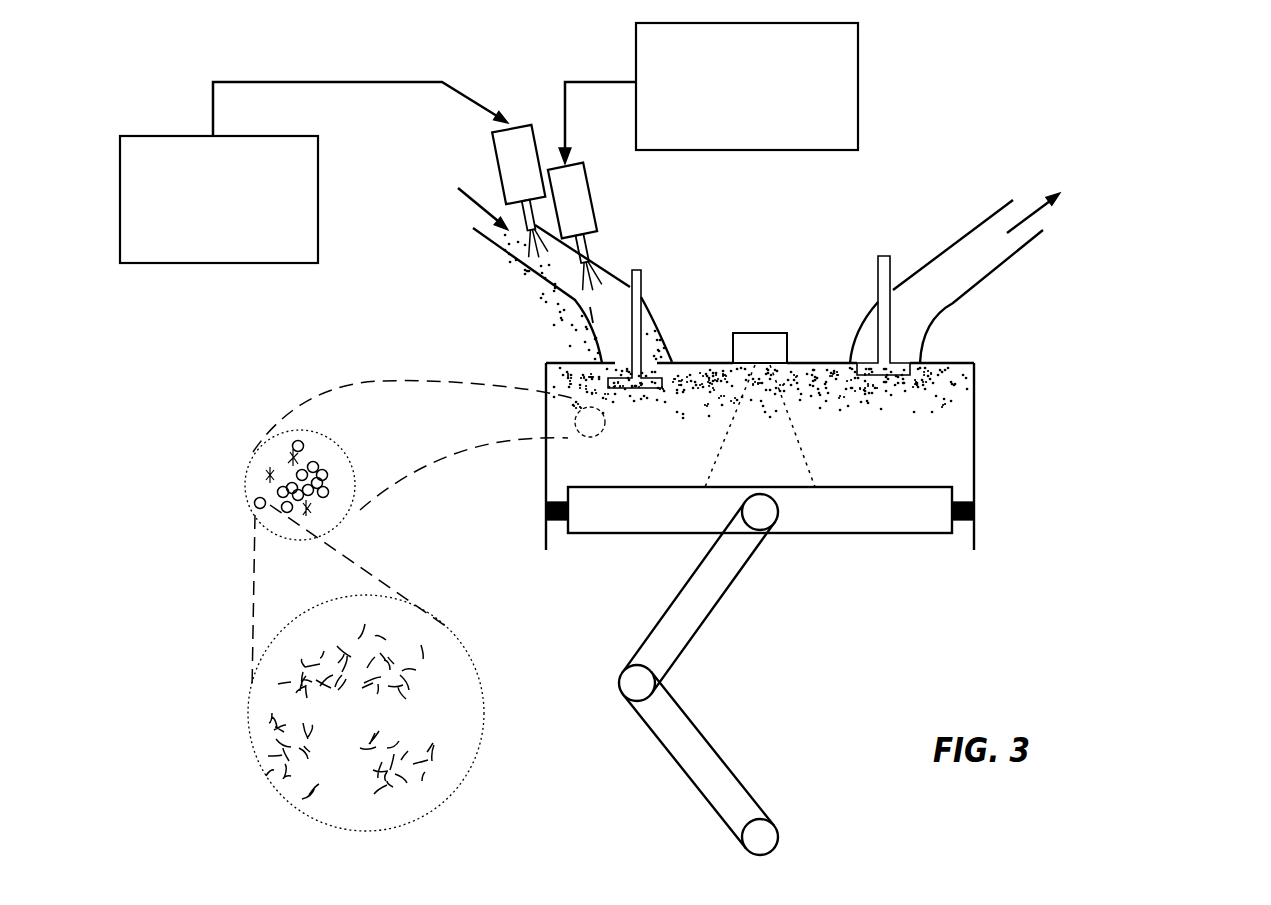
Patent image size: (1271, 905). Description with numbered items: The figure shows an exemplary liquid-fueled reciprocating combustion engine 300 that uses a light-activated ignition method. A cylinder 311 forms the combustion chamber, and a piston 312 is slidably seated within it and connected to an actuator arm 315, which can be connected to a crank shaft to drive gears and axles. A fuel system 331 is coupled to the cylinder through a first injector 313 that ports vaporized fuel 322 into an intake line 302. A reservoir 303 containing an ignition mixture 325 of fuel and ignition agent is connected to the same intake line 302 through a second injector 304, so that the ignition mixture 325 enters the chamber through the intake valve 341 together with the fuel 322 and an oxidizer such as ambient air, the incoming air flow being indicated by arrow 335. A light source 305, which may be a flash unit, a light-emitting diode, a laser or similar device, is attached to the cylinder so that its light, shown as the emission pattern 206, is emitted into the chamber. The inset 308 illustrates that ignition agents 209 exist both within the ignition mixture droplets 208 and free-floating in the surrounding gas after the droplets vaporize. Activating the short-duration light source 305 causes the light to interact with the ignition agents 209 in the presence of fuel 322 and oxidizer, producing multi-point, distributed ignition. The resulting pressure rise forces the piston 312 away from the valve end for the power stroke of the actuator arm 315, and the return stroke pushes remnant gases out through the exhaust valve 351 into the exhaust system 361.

The reciprocating combustion engine 300 is at (897, 524).
The intake line 302 is at (612, 272).
The reservoir 303 is at (227, 263).
The second injector 304 is at (522, 135).
The light source 305 is at (753, 333).
The inset 308 is at (255, 453).
The cylinder 311 is at (975, 462).
The piston 312 is at (833, 522).
The first injector 313 is at (598, 210).
The actuator arm 315 is at (692, 618).
The vaporized fuel 322 is at (593, 315).
The ignition mixture 325 is at (512, 251).
The fuel system 331 is at (858, 90).
The intake air flow 335 is at (452, 182).
The intake valve 341 is at (642, 300).
The exhaust valve 351 is at (877, 262).
The exhaust system 361 is at (960, 300).
The fuel spray plume 206 is at (807, 467).
The ignition mixture droplets 208 is at (287, 623).
The ignition agents 209 is at (303, 673).